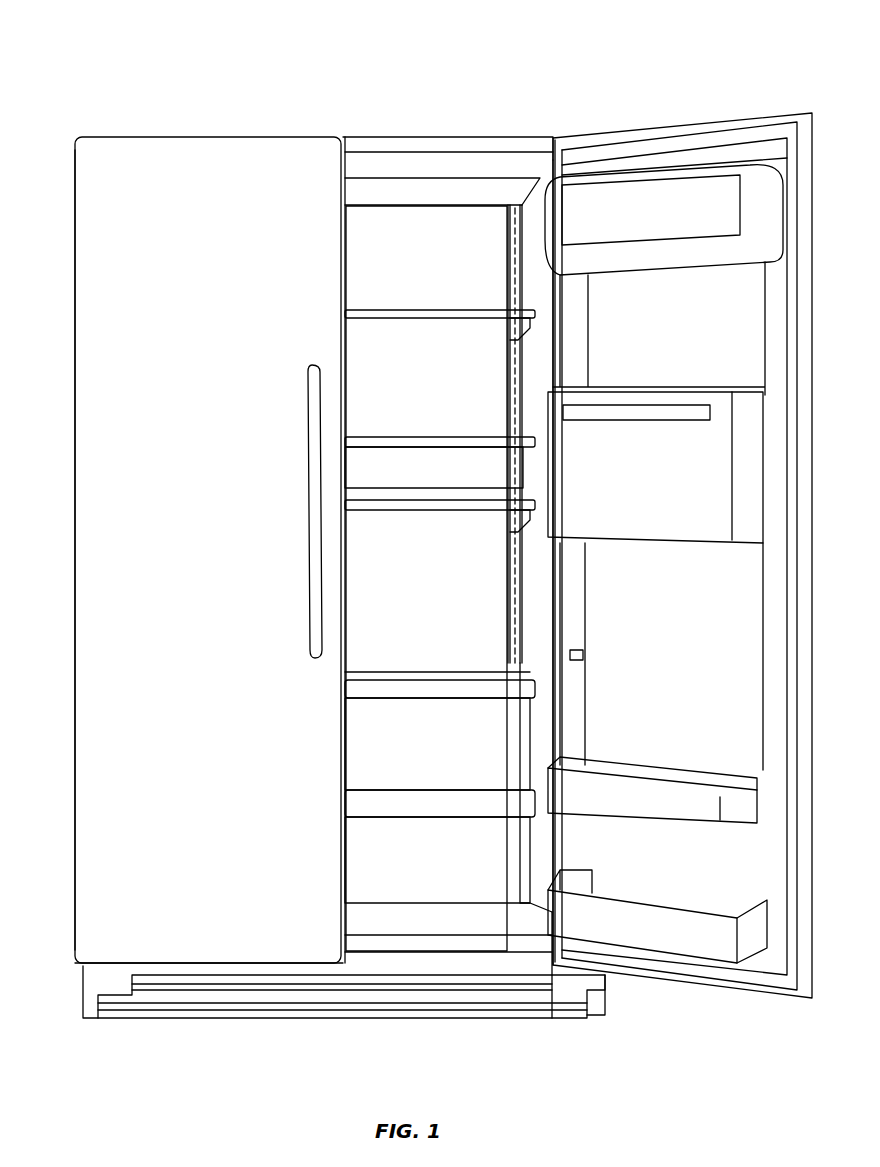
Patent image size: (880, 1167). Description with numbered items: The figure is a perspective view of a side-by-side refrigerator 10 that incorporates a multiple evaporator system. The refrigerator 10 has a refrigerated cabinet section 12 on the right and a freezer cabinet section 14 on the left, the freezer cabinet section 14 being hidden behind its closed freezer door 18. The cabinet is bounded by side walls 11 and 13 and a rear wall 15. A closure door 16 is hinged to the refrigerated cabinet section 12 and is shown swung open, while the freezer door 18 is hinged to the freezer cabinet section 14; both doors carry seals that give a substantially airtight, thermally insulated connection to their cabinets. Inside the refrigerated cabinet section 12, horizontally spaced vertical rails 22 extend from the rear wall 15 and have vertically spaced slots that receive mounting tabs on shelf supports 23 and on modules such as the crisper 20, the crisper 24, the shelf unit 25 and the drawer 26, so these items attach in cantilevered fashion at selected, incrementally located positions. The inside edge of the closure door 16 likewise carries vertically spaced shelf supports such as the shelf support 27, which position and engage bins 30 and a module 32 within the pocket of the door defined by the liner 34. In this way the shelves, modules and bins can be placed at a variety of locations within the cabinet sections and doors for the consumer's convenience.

The refrigerator 10 is at (638, 80).
The side wall 11 is at (545, 603).
The refrigerated cabinet section 12 is at (432, 218).
The side wall 13 is at (75, 612).
The freezer cabinet section 14 is at (205, 212).
The rear wall 15 is at (480, 640).
The closure door 16 is at (812, 312).
The freezer door 18 is at (108, 362).
The crisper 20 is at (437, 885).
The vertical rails 22 is at (515, 433).
The shelf supports 23 is at (515, 326).
The crisper 24 is at (405, 715).
The shelf unit 25 is at (412, 312).
The drawer 26 is at (405, 460).
The shelf support 27 is at (760, 667).
The bins 30 is at (762, 222).
The module 32 is at (752, 482).
The liner 34 is at (712, 614).